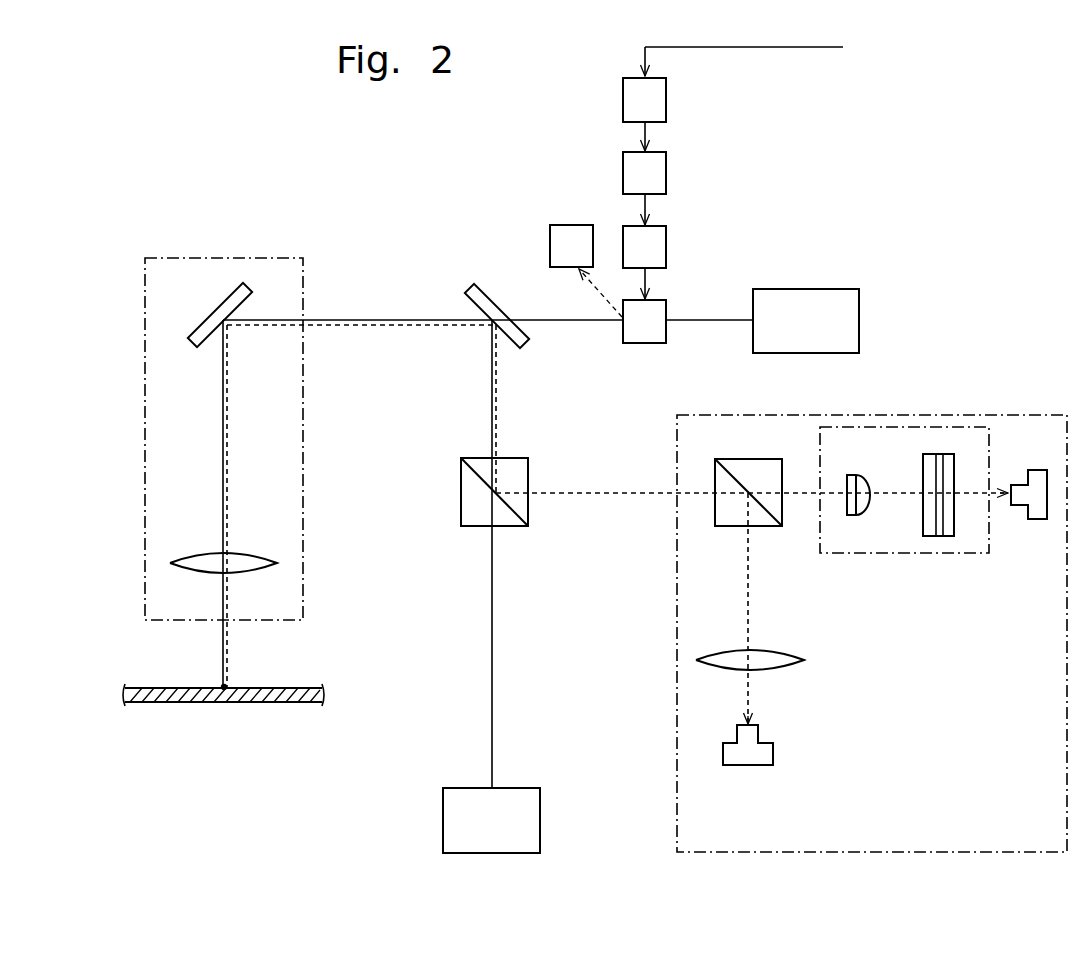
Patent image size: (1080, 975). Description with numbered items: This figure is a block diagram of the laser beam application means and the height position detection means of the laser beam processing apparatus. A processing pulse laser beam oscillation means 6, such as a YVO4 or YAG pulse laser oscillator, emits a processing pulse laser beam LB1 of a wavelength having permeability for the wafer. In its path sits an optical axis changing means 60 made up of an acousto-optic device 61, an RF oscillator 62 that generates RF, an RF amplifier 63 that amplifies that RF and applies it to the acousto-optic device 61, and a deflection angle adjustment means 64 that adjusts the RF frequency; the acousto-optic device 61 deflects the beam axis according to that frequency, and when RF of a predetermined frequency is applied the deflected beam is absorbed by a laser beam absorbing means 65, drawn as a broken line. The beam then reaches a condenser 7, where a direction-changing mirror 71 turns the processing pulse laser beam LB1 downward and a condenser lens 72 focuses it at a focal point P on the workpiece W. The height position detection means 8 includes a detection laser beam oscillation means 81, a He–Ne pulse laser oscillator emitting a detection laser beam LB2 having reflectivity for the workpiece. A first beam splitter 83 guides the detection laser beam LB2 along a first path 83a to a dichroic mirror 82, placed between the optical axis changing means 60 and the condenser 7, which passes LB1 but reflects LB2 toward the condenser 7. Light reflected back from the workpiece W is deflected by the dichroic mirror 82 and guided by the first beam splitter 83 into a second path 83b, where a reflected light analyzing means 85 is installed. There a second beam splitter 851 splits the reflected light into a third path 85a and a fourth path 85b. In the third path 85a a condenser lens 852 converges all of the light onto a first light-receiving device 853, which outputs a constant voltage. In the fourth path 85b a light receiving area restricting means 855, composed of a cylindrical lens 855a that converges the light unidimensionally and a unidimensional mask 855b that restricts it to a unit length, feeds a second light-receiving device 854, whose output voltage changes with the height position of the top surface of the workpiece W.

The processing pulse laser beam oscillation means 6 is at (797, 336).
The optical axis changing means 60 is at (667, 230).
The acousto-optic device 61 is at (653, 344).
The RF oscillator 62 is at (666, 170).
The RF amplifier 63 is at (666, 232).
The deflection angle adjustment means 64 is at (666, 96).
The laser beam absorbing means 65 is at (562, 225).
The processing pulse laser beam LB1 is at (723, 320).
The detection laser beam LB2 is at (492, 641).
The condenser 7 is at (186, 411).
The direction-changing mirror 71 is at (232, 297).
The condenser lens 72 is at (188, 556).
The workpiece W is at (297, 690).
The focal point P is at (224, 687).
The height position detection means 8 is at (618, 831).
The detection laser beam oscillation means 81 is at (476, 834).
The dichroic mirror 82 is at (485, 298).
The first beam splitter 83 is at (468, 488).
The first path 83a is at (485, 398).
The second path 83b is at (586, 508).
The reflected light analyzing means 85 is at (841, 582).
The second beam splitter 851 is at (757, 460).
The condenser lens 852 is at (712, 657).
The first light-receiving device 853 is at (749, 768).
The second light-receiving device 854 is at (1040, 511).
The light receiving area restricting means 855 is at (911, 507).
The cylindrical lens 855a is at (850, 475).
The unidimensional mask 855b is at (945, 455).
The third path 85a is at (735, 600).
The fourth path 85b is at (795, 503).